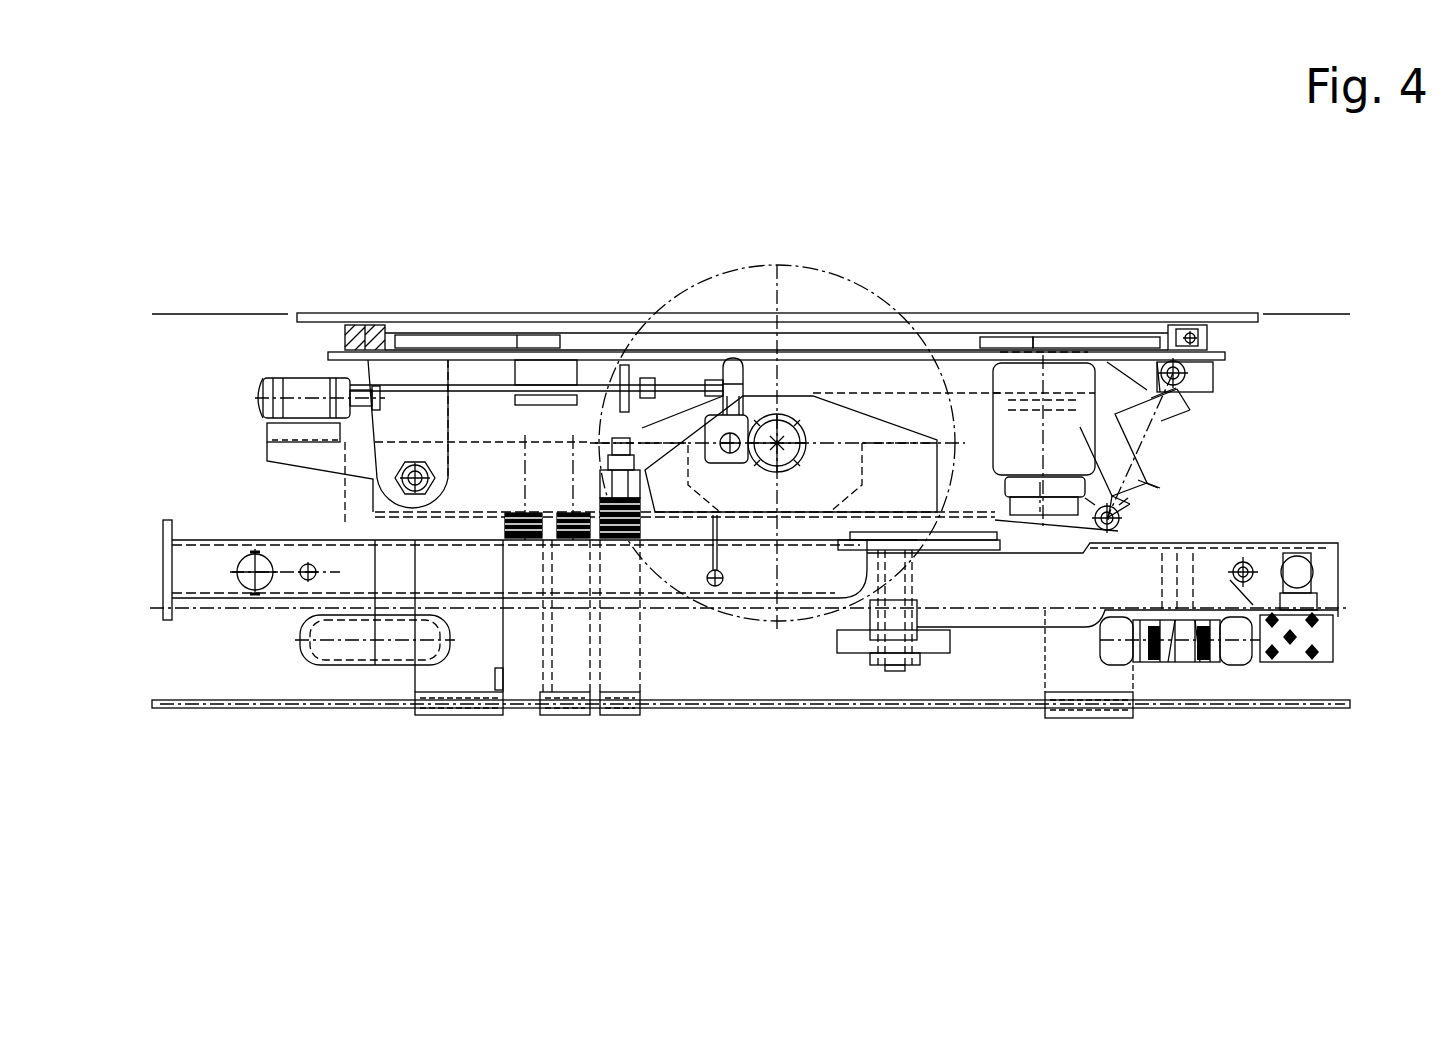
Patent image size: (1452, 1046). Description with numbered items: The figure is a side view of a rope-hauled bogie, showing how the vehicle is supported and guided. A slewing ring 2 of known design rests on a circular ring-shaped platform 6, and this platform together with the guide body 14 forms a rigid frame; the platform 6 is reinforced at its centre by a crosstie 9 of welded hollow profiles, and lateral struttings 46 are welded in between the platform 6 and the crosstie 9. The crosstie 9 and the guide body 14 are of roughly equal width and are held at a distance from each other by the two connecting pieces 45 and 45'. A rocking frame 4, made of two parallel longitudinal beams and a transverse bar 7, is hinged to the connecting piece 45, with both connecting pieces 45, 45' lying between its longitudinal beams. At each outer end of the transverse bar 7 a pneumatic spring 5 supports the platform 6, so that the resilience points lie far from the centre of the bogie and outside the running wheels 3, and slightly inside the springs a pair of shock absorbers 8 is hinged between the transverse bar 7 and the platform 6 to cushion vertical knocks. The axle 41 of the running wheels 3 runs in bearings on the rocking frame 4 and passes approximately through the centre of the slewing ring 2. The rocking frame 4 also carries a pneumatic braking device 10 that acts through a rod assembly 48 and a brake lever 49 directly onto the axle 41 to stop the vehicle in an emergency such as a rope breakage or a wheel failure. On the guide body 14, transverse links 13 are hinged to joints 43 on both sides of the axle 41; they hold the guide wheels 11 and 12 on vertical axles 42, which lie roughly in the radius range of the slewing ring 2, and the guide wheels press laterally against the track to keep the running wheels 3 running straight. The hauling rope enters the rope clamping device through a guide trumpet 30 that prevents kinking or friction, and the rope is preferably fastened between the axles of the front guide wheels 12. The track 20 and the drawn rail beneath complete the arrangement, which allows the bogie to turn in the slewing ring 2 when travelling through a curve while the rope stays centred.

The slewing ring 2 is at (1197, 335).
The running wheels 3 is at (660, 300).
The rocking frame 4 is at (497, 470).
The pneumatic spring 5 is at (1078, 428).
The platform 6 is at (1218, 345).
The transverse bar 7 is at (1057, 489).
The shock absorbers 8 is at (1150, 445).
The crosstie 9 is at (1210, 382).
The pneumatic braking device 10 is at (268, 378).
The guide wheel 11 is at (1240, 652).
The guide wheel 12 is at (338, 652).
The transverse links 13 is at (1003, 593).
The guide body 14 is at (812, 573).
The rail 20 is at (245, 700).
The guide trumpet 30 is at (447, 715).
The axle 41 is at (792, 415).
The vertical axles 42 is at (1167, 663).
The joints 43 is at (888, 667).
The connecting piece 45 is at (245, 474).
The connecting piece 45' is at (826, 710).
The lateral struttings 46 is at (540, 335).
The rod assembly 48 is at (598, 385).
The brake lever 49 is at (738, 375).